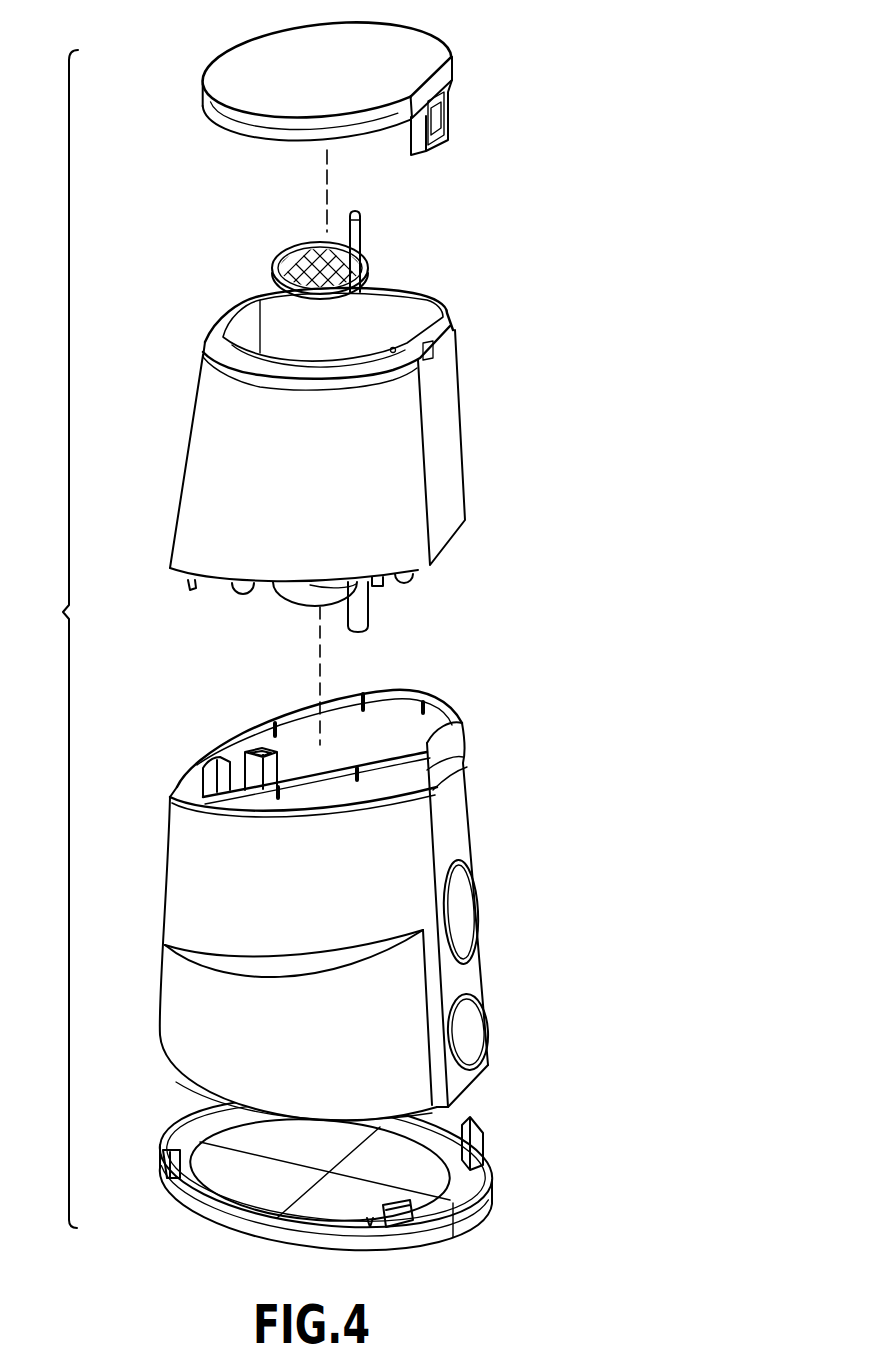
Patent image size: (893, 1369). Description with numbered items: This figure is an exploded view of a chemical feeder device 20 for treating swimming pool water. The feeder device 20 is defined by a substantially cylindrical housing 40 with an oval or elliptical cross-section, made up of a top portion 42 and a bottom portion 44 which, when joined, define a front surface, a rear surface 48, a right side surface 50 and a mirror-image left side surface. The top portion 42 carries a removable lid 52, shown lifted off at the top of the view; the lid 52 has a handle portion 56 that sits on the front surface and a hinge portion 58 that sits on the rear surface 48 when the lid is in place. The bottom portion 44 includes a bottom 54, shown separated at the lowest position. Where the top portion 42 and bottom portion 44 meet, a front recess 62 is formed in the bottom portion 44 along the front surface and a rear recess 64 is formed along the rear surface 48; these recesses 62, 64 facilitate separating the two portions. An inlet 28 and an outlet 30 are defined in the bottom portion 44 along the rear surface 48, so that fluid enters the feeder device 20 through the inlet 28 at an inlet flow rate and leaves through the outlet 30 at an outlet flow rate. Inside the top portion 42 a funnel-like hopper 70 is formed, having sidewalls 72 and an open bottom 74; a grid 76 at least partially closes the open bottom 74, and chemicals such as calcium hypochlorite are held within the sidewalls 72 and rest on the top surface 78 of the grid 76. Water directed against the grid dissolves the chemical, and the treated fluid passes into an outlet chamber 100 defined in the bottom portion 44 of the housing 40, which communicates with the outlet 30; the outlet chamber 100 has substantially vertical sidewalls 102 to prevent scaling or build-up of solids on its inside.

The feeder device 20 is at (160, 28).
The inlet 28 is at (462, 903).
The outlet 30 is at (473, 1023).
The housing 40 is at (172, 212).
The top portion 42 is at (484, 350).
The bottom portion 44 is at (500, 782).
The rear surface 48 is at (452, 403).
The right side surface 50 is at (415, 553).
The lid 52 is at (382, 32).
The bottom 54 is at (220, 1227).
The handle portion 56 is at (204, 90).
The hinge portion 58 is at (432, 140).
The front recess 62 is at (190, 772).
The rear recess 64 is at (453, 740).
The hopper 70 is at (380, 323).
The sidewalls 72 is at (277, 327).
The open bottom 74 is at (290, 600).
The grid 76 is at (322, 250).
The top surface 78 is at (277, 246).
The outlet chamber 100 is at (380, 720).
The substantially vertical sidewalls 102 is at (313, 727).